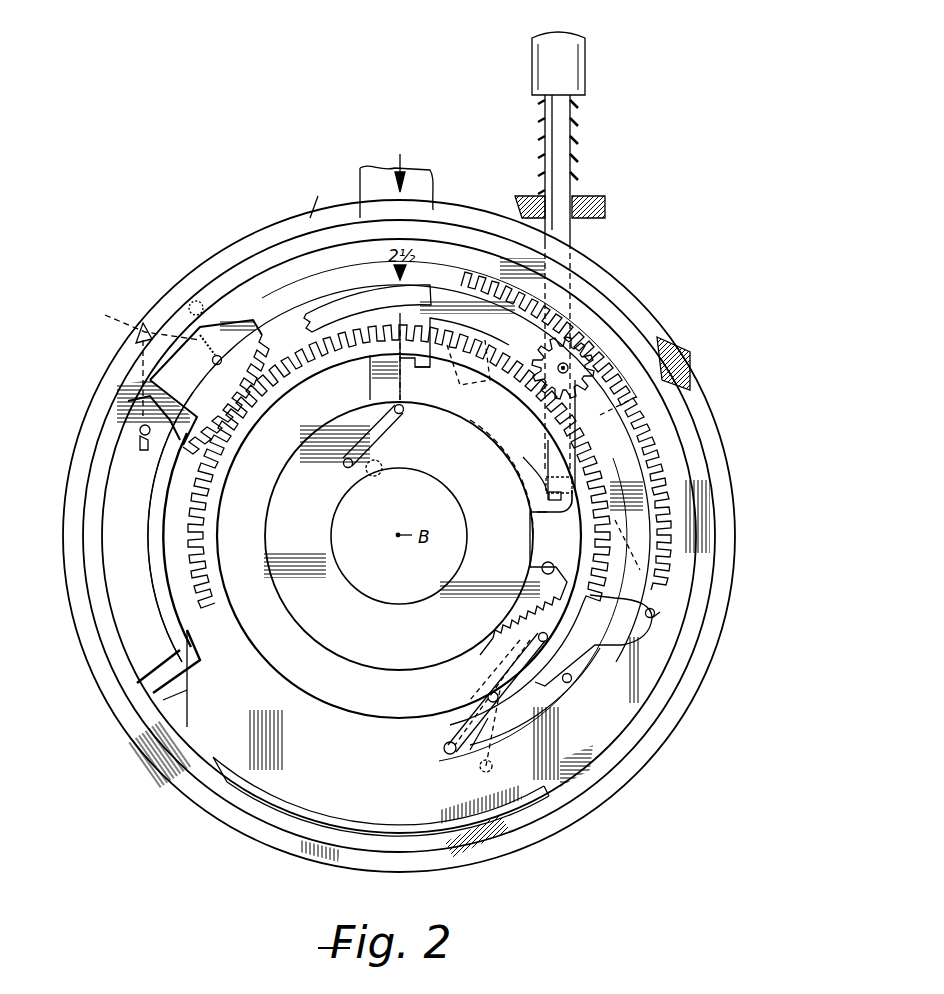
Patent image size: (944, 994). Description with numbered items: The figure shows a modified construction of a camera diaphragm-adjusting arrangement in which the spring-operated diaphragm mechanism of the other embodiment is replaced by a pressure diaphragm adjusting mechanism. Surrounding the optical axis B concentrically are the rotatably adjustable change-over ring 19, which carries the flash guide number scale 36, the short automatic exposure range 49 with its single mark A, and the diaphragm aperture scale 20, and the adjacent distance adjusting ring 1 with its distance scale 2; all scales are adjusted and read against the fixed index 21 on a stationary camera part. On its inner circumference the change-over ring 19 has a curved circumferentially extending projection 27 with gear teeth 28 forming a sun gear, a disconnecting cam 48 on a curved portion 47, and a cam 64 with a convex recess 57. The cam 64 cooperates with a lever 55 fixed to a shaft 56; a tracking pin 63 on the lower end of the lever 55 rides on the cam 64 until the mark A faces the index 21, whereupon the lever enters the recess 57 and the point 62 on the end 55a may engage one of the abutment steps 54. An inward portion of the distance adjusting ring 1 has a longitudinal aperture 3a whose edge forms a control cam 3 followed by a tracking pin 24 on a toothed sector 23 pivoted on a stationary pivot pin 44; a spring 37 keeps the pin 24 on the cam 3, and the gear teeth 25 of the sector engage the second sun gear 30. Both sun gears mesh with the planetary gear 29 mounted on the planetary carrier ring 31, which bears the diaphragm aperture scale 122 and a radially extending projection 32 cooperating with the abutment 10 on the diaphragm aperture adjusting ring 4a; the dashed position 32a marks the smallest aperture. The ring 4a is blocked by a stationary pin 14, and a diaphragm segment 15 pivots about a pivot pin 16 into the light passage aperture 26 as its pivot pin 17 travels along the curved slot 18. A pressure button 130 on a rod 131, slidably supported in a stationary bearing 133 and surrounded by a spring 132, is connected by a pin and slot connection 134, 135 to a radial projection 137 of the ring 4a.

The distance adjusting ring 1 is at (462, 232).
The distance scale 2 is at (238, 275).
The control cam 3 is at (148, 512).
The longitudinal aperture 3a is at (135, 655).
The diaphragm aperture adjusting ring 4a is at (366, 655).
The projection or abutment 10 is at (370, 374).
The stationary pin 14 is at (530, 567).
The diaphragm segment 15 is at (452, 494).
The pivot pin 16 is at (376, 476).
The pivot pin 17 is at (402, 412).
The curved slot 18 is at (344, 466).
The change-over ring 19 is at (440, 210).
The diaphragm aperture scale 20 is at (155, 370).
The fixed index 21 is at (396, 176).
The toothed sector 23 is at (175, 372).
The tracking pin 24 is at (140, 440).
The gear teeth 25 is at (255, 332).
The light passage aperture 26 is at (402, 585).
The circumferentially extending projection 27 is at (552, 293).
The gear teeth 28 is at (560, 320).
The planetary gear 29 is at (597, 348).
The second sun gear 30 is at (193, 550).
The planetary carrier ring 31 is at (630, 470).
The radially extending projection 32 is at (416, 367).
The position of projection 32a is at (474, 380).
The flash guide number scale 36 is at (310, 218).
The spring 37 is at (212, 340).
The stationary pivot pin 44 is at (135, 318).
The curved portion 47 is at (270, 795).
The disconnecting cam 48 is at (190, 705).
The automatic exposure range 49 is at (146, 345).
The abutment steps 54 is at (545, 600).
The lever 55 is at (470, 752).
The end of lever 55a is at (520, 665).
The shaft 56 is at (488, 696).
The convex recess 57 is at (654, 616).
The point 62 is at (545, 640).
The tracking pin 63 is at (446, 754).
The cam 64 is at (570, 682).
The diaphragm aperture scale 122 is at (342, 300).
The pressure button 130 is at (575, 50).
The rod 131 is at (558, 120).
The spring 132 is at (580, 150).
The stationary bearing 133 is at (607, 210).
The pin and slot connection 134 is at (548, 505).
The pin and slot connection 135 is at (547, 492).
The radial projection 137 is at (550, 516).